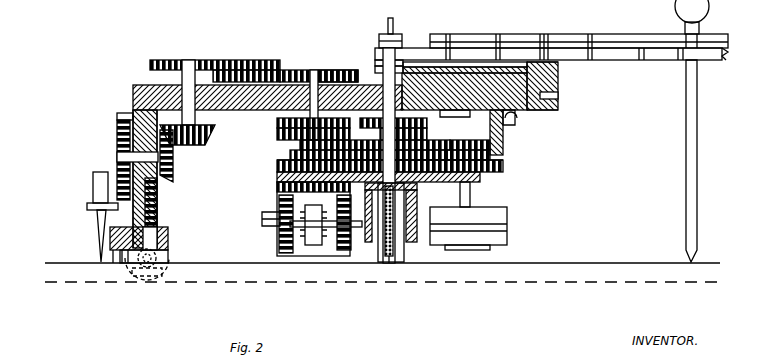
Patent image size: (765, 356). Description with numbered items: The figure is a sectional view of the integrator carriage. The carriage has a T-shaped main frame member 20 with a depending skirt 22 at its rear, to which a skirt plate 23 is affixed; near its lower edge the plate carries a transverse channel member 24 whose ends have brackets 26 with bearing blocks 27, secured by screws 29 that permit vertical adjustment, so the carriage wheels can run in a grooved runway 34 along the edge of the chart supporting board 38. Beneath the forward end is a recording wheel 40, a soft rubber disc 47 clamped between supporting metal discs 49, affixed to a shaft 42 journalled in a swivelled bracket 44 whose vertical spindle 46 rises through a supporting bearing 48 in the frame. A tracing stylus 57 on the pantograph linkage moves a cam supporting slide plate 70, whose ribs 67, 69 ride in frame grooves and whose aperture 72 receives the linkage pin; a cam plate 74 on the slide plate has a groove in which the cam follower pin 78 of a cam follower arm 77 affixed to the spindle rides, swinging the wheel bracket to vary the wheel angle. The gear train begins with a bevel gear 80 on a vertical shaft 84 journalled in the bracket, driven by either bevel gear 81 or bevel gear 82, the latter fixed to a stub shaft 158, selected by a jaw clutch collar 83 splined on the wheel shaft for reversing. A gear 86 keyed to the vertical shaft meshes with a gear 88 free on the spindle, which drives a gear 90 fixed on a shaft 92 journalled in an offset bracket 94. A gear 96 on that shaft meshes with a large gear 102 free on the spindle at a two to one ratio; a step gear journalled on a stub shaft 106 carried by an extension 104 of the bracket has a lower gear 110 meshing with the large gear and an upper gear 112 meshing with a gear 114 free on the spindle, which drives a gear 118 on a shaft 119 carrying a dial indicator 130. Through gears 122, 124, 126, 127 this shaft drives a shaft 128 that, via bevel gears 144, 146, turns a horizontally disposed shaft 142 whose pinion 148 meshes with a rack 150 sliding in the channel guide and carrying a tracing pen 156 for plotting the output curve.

The main frame member 20 is at (151, 84).
The depending skirt 22 is at (133, 112).
The skirt plate 23 is at (142, 90).
The transverse channel member 24 is at (113, 264).
The brackets 26 is at (166, 230).
The bearing blocks 27 is at (166, 258).
The screws 29 is at (156, 210).
The grooved runway 34 is at (533, 277).
The chart supporting board 38 is at (540, 263).
The recording wheel 40 is at (396, 258).
The shaft 42 is at (358, 228).
The swivelled bracket 44 is at (482, 177).
The vertical spindle 46 is at (393, 22).
The soft rubber disc 47 is at (389, 258).
The supporting bearing 48 is at (380, 66).
The supporting metal discs 49 is at (404, 252).
The tracing stylus 57 is at (698, 128).
The rib 67 is at (558, 96).
The rib 69 is at (455, 114).
The cam supporting slide plate 70 is at (558, 80).
The aperture 72 is at (558, 72).
The cam plate 74 is at (545, 112).
The cam follower arm 77 is at (378, 52).
The cam follower pin 78 is at (517, 115).
The bevel gear 80 is at (277, 205).
The bevel gear 81 is at (343, 250).
The bevel gear 82 is at (288, 256).
The jaw clutch collar 83 is at (312, 248).
The vertical shaft 84 is at (277, 190).
The gear 86 is at (277, 178).
The gear 88 is at (466, 216).
The gear 90 is at (505, 164).
The shaft 92 is at (505, 152).
The offset bracket 94 is at (505, 141).
The gear 96 is at (466, 145).
The large gear 102 is at (427, 133).
The extension 104 is at (292, 164).
The stub shaft 106 is at (291, 154).
The lower gear 110 is at (300, 143).
The upper gear 112 is at (278, 125).
The gear 114 is at (425, 121).
The gear 118 is at (280, 120).
The shaft 119 is at (319, 73).
The gear 122 is at (303, 68).
The gear 124 is at (286, 66).
The gear 126 is at (251, 62).
The gear 127 is at (200, 60).
The shaft 128 is at (180, 66).
The dial indicator 130 is at (378, 61).
The horizontally disposed shaft 142 is at (128, 157).
The bevel gear 144 is at (196, 145).
The bevel gear 146 is at (163, 178).
The pinion 148 is at (128, 116).
The rack 150 is at (123, 264).
The tracing pen 156 is at (102, 220).
The stub shaft 158 is at (264, 226).